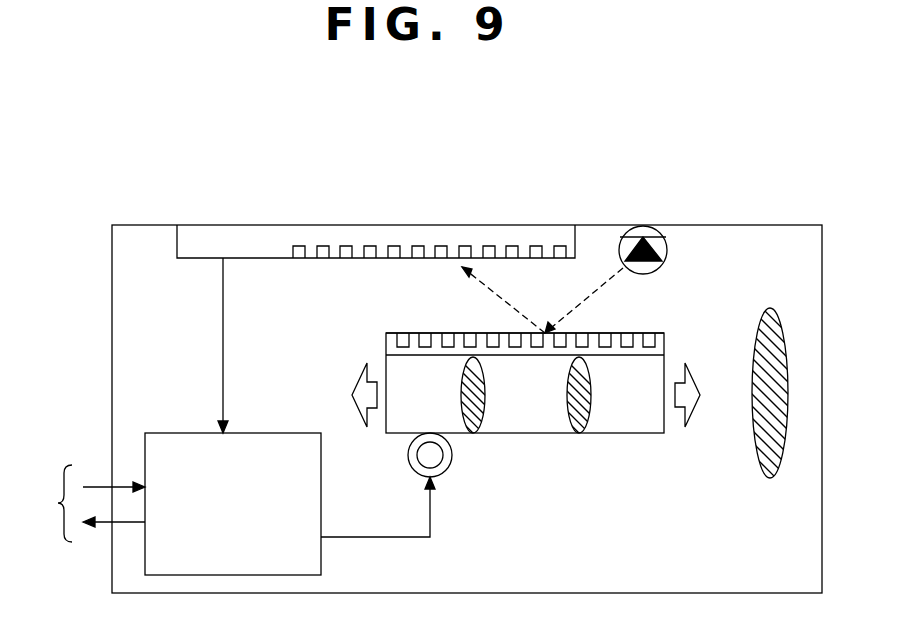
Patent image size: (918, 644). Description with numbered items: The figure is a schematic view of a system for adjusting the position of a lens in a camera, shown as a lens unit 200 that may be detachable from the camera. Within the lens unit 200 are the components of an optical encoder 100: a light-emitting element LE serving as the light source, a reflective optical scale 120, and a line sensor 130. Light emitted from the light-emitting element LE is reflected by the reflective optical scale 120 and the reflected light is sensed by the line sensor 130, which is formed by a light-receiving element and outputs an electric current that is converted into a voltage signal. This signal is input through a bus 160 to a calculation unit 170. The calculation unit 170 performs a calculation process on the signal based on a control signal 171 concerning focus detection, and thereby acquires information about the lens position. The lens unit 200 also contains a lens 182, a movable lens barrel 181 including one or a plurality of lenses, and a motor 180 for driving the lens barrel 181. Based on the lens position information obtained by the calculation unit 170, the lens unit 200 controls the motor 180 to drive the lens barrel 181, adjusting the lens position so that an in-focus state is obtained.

The lens unit 200 is at (738, 187).
The optical encoder 100 is at (521, 225).
The line sensor 130 is at (336, 259).
The reflective optical scale 120 is at (386, 341).
The bus 160 is at (222, 314).
The calculation unit 170 is at (322, 570).
The control signal 171 is at (77, 503).
The motor 180 is at (452, 460).
The movable lens barrel 181 is at (628, 434).
The lens 182 is at (770, 479).
The light-emitting element LE is at (648, 231).